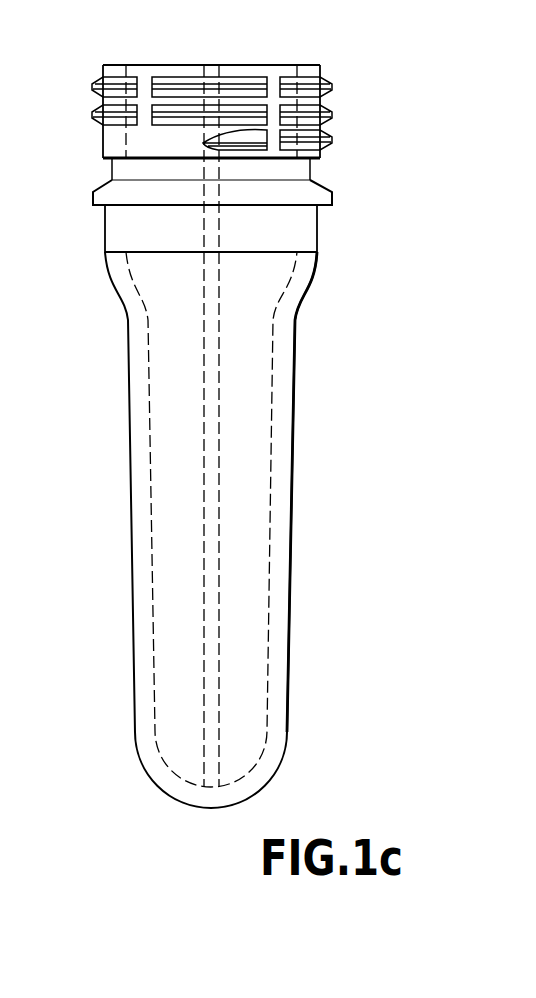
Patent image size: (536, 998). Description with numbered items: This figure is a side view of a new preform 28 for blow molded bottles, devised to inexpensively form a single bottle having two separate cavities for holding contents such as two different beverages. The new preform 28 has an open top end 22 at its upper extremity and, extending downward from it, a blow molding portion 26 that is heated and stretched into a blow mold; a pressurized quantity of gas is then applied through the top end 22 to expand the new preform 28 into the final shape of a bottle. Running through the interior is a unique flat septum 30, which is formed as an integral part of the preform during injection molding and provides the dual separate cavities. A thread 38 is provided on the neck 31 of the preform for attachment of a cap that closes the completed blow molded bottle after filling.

The top end 22 is at (190, 82).
The blow molding portion 26 is at (344, 805).
The new preform 28 is at (215, 407).
The flat septum 30 is at (212, 64).
The neck 31 is at (103, 143).
The thread 38 is at (91, 87).